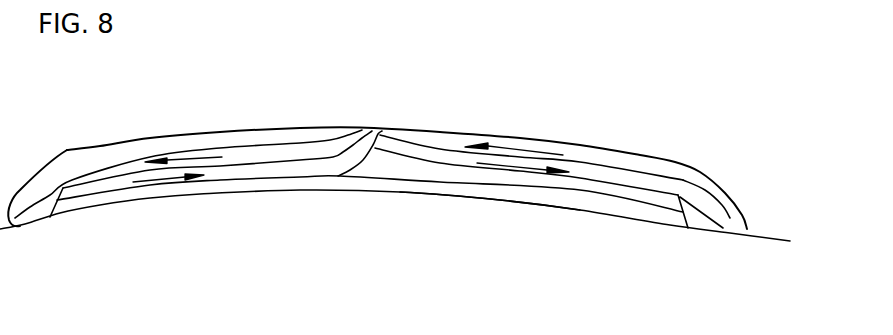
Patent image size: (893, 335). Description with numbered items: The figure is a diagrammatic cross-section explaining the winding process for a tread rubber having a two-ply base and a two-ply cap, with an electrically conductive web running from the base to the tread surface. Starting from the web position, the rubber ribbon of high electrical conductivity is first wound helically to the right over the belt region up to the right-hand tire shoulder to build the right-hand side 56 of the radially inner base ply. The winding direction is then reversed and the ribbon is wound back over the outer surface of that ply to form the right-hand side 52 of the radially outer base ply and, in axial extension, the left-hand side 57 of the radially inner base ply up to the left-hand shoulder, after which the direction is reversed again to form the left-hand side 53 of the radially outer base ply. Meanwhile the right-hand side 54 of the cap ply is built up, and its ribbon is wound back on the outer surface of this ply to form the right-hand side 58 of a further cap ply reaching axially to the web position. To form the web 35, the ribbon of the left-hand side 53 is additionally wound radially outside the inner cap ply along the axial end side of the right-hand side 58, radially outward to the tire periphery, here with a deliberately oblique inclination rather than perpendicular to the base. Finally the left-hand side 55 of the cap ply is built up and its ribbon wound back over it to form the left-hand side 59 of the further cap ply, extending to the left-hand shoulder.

The junction / crossover region 35 is at (379, 134).
The right-hand side of the radially outer ply of the base layer 52 is at (573, 188).
The left-hand side of the radially outer base ply 53 is at (222, 172).
The right-hand side of the cap ply 54 is at (623, 180).
The left-hand side of the cap ply 55 is at (240, 158).
The right-hand side of the radially inner ply 56 is at (497, 191).
The left-hand side of the radially inner ply of the base layer 57 is at (287, 180).
The right-hand side of the further cap ply 58 is at (582, 158).
The left-hand side of the further cap ply 59 is at (212, 142).